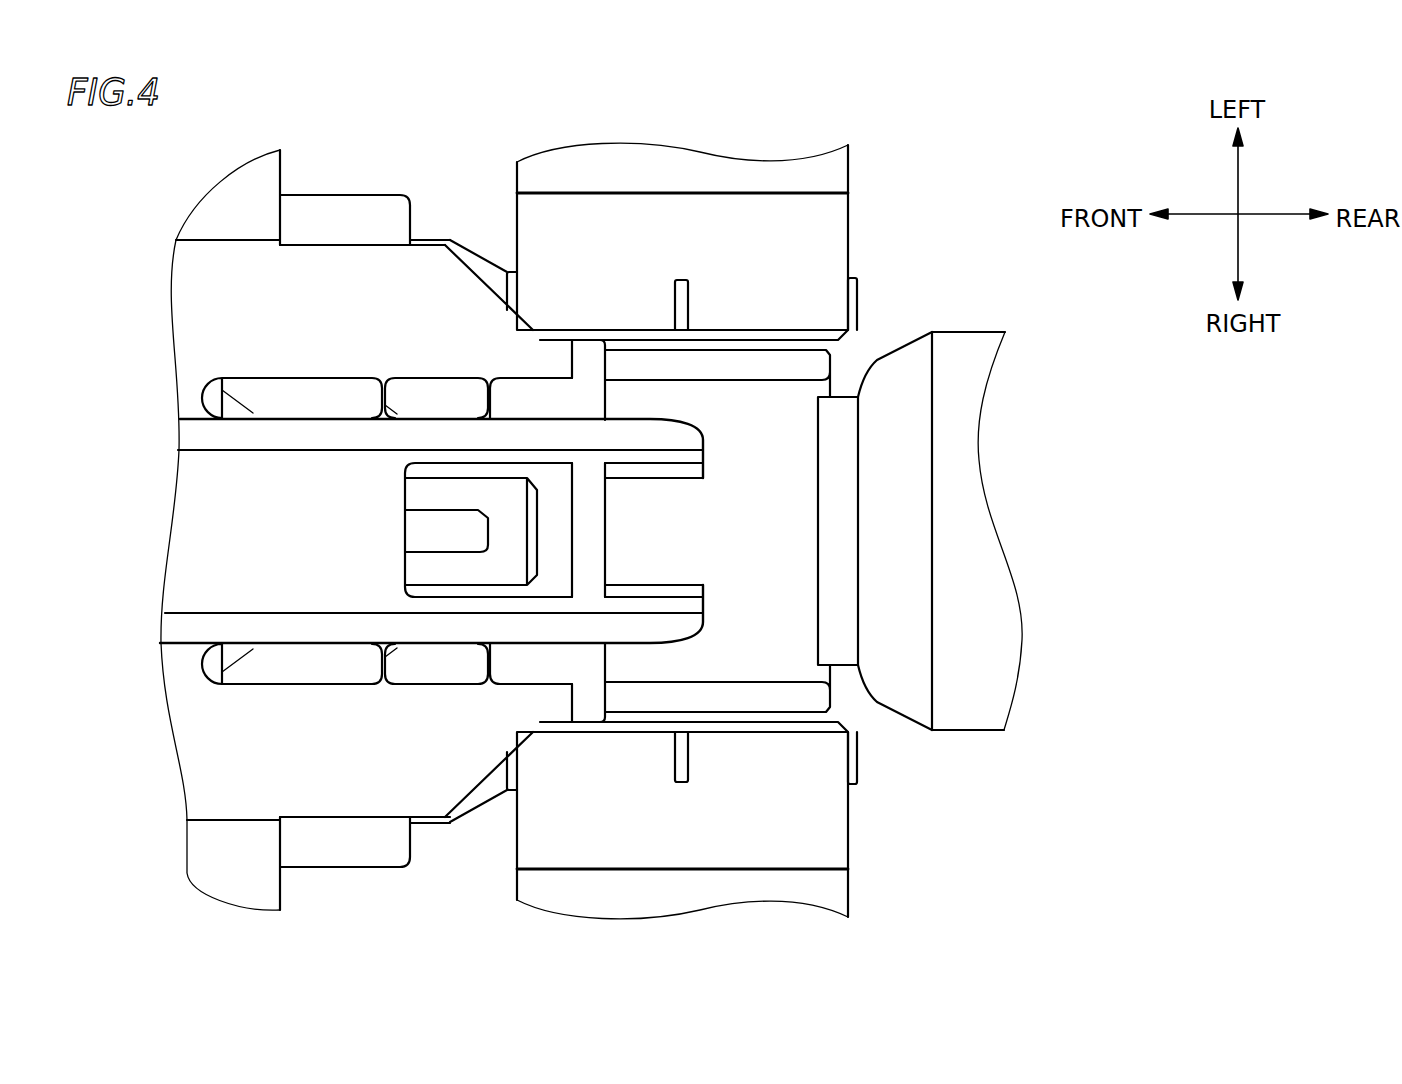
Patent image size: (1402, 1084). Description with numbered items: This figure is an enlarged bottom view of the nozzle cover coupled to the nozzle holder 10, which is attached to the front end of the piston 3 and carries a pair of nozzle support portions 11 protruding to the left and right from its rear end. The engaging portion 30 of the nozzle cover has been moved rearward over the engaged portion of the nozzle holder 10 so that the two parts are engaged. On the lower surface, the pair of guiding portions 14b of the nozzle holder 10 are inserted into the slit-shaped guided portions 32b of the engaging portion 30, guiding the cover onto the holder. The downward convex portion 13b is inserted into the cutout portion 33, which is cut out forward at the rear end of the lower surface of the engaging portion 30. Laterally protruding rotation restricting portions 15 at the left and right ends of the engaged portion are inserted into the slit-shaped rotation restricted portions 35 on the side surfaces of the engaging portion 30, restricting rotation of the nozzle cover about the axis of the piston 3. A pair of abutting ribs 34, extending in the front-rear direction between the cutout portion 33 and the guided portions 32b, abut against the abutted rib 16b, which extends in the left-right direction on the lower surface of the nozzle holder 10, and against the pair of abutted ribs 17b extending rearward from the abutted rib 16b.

The engaging portion 30 is at (161, 256).
The rotation restricting portion 15 is at (345, 195).
The rotation restricted portion 35 is at (432, 240).
The nozzle support portion 11 is at (822, 243).
The nozzle holder 10 is at (855, 699).
The piston 3 is at (955, 385).
The abutting rib 34 is at (706, 448).
The abutted rib 17b is at (680, 478).
The abutted rib 16b is at (587, 538).
The convex portion 13b is at (450, 520).
The guiding portion 14b is at (282, 405).
The guided portion 32b is at (430, 390).
The cutout portion 33 is at (490, 578).